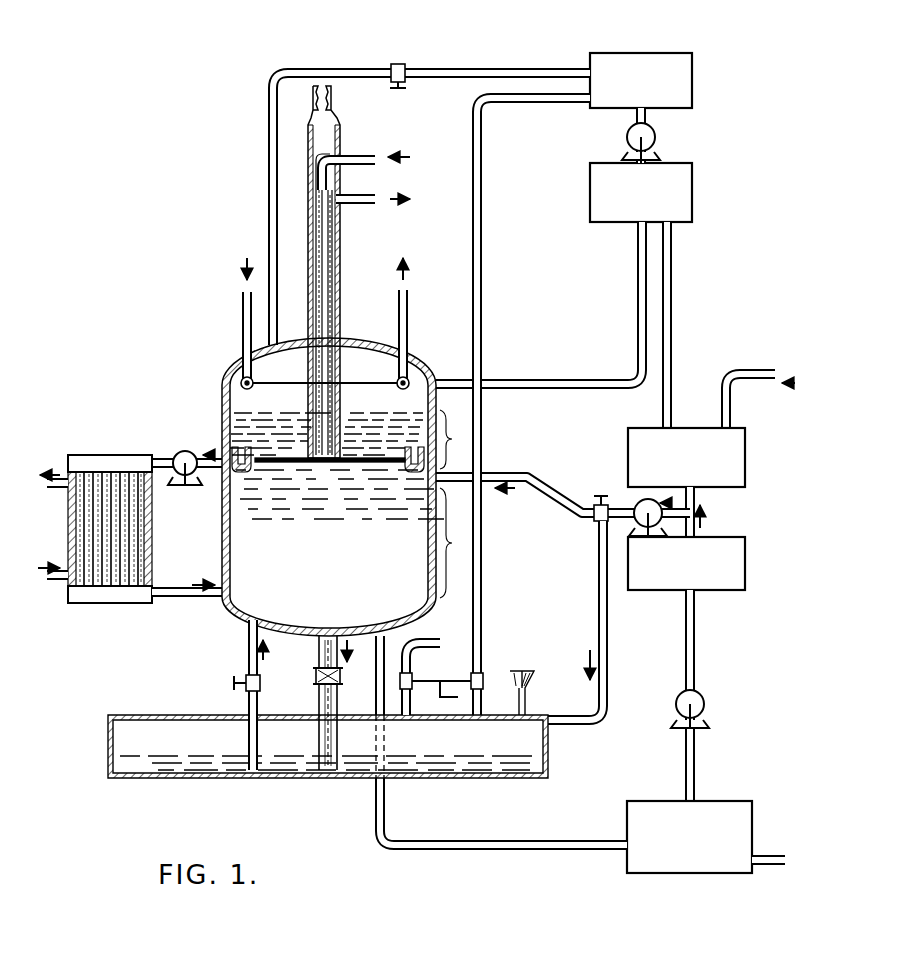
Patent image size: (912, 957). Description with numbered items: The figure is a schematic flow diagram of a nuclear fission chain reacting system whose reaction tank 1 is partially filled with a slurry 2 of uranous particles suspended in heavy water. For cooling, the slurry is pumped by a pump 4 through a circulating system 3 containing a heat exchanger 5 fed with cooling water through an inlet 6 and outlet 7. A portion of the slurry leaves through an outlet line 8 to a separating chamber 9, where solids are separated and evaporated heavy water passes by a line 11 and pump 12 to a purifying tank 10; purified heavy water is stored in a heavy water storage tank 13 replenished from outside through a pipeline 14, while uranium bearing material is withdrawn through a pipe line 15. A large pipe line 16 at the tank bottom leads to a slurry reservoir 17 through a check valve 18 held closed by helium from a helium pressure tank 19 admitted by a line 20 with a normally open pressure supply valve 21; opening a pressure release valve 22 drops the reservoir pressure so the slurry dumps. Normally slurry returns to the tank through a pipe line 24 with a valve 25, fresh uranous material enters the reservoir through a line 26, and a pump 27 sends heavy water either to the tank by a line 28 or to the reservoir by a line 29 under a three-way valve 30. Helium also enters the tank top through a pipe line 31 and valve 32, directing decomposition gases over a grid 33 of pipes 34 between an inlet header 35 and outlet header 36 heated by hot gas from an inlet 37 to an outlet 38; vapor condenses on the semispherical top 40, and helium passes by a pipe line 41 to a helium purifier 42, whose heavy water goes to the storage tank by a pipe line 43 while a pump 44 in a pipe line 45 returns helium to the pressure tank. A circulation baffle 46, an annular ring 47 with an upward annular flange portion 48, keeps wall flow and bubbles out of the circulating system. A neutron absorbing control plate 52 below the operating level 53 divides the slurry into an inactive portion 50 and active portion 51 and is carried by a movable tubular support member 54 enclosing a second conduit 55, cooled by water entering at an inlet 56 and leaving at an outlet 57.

The reaction tank 1 is at (319, 364).
The slurry 2 is at (250, 600).
The circulating system 3 is at (129, 526).
The pump 4 is at (180, 448).
The heat exchanger 5 is at (90, 597).
The inlet 6 is at (55, 580).
The outlet 7 is at (55, 488).
The outlet line 8 is at (375, 695).
The separating chamber 9 is at (640, 866).
The purifying tank 10 is at (735, 565).
The line 11 is at (696, 750).
The pump 12 is at (704, 697).
The heavy water storage tank 13 is at (735, 465).
The pipeline 14 is at (731, 410).
The pipe line 15 is at (770, 855).
The pipe line 16 is at (318, 652).
The slurry reservoir 17 is at (115, 746).
The check valve 18 is at (315, 678).
The helium pressure tank 19 is at (690, 75).
The line 20 is at (483, 418).
The pressure supply valve 21 is at (484, 678).
The pressure release valve 22 is at (403, 672).
The pipe line 24 is at (246, 658).
The valve 25 is at (245, 690).
The line 26 is at (530, 686).
The pump 27 is at (640, 500).
The line 28 is at (575, 505).
The line 29 is at (598, 580).
The three-way valve 30 is at (594, 520).
The pipe line 31 is at (455, 70).
The valve 32 is at (405, 84).
The grid 33 is at (290, 368).
The pipes 34 is at (340, 382).
The inlet header 35 is at (240, 388).
The outlet header 36 is at (409, 378).
The inlet 37 is at (242, 308).
The outlet 38 is at (410, 308).
The semispherical top 40 is at (350, 346).
The pipe line 41 is at (560, 388).
The helium purifier 42 is at (682, 190).
The pipe line 43 is at (672, 297).
The pump 44 is at (626, 140).
The pipe line 45 is at (636, 122).
The circulation baffle 46 is at (400, 465).
The annular ring 47 is at (415, 472).
The annular flange portion 48 is at (400, 447).
The inactive portion 50 is at (459, 439).
The active portion 51 is at (459, 543).
The control plate 52 is at (280, 470).
The operating level 53 is at (338, 410).
The tubular support member 54 is at (341, 243).
The second conduit 55 is at (328, 170).
The inlet 56 is at (378, 155).
The outlet 57 is at (378, 195).